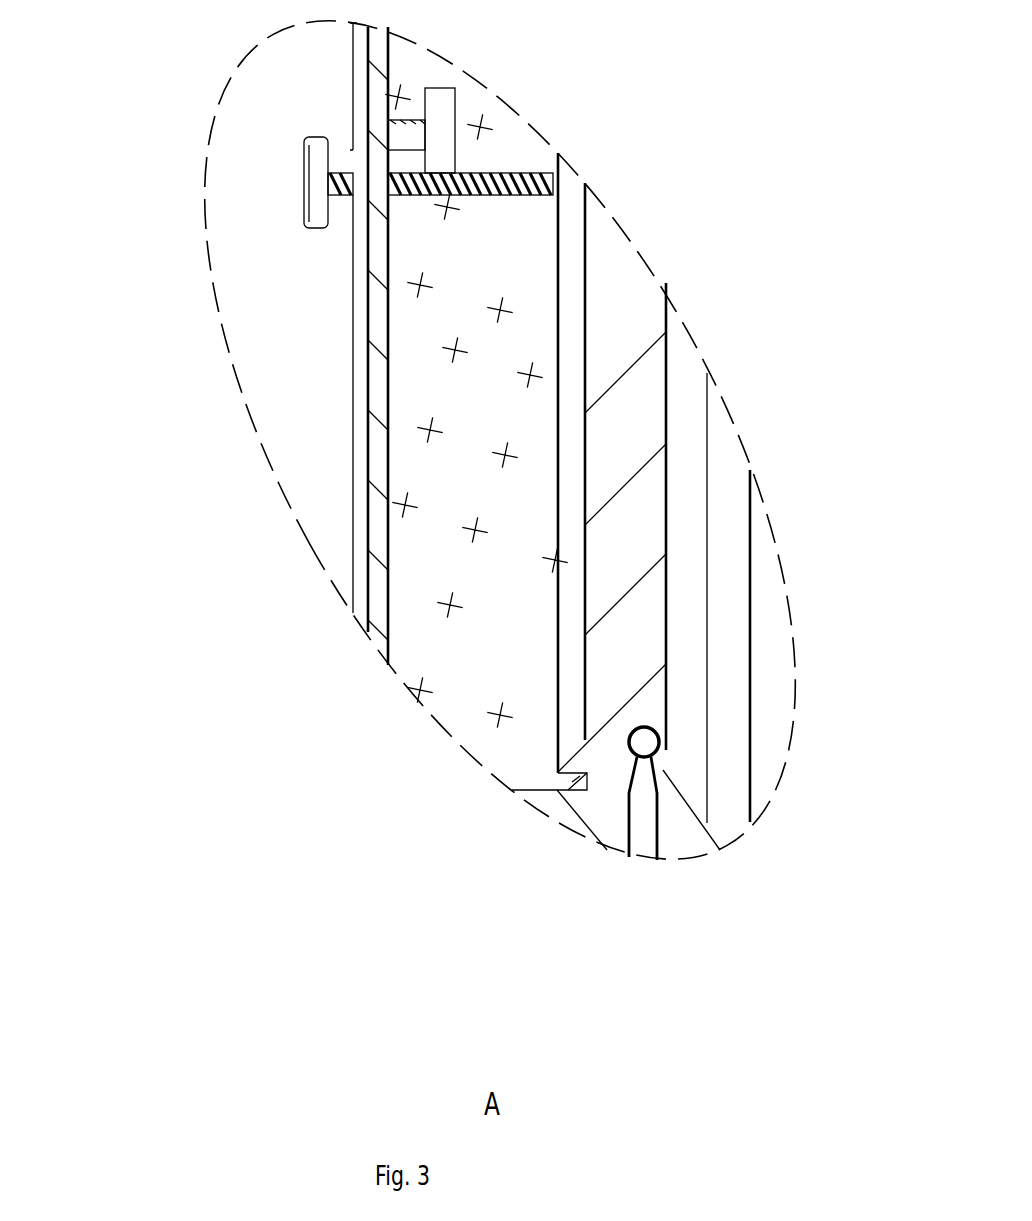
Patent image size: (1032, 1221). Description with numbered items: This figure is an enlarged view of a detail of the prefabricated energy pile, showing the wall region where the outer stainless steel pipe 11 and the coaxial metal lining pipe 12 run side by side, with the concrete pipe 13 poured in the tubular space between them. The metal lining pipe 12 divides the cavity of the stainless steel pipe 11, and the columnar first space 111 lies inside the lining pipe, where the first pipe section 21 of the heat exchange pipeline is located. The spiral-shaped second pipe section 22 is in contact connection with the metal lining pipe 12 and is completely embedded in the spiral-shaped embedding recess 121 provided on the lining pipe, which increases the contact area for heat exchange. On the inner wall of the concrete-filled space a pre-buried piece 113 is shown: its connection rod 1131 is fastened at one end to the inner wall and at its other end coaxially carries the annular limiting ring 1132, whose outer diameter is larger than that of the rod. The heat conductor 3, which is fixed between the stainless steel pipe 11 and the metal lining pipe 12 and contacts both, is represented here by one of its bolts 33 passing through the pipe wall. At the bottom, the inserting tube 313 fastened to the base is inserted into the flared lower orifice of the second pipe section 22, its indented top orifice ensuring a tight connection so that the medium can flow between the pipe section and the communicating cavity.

The heat conductor 3 is at (108, 264).
The bolts 33 is at (323, 183).
The stainless steel pipe 11 is at (385, 455).
The metal lining pipe 12 is at (632, 312).
The concrete pipe 13 is at (415, 560).
The first space 111 is at (683, 468).
The pre-buried piece 113 is at (647, 22).
The connection rod 1131 is at (430, 112).
The limiting ring 1132 is at (447, 143).
The embedding recess 121 is at (557, 777).
The first pipe section 21 is at (735, 560).
The second pipe section 22 is at (660, 728).
The inserting tube 313 is at (650, 832).